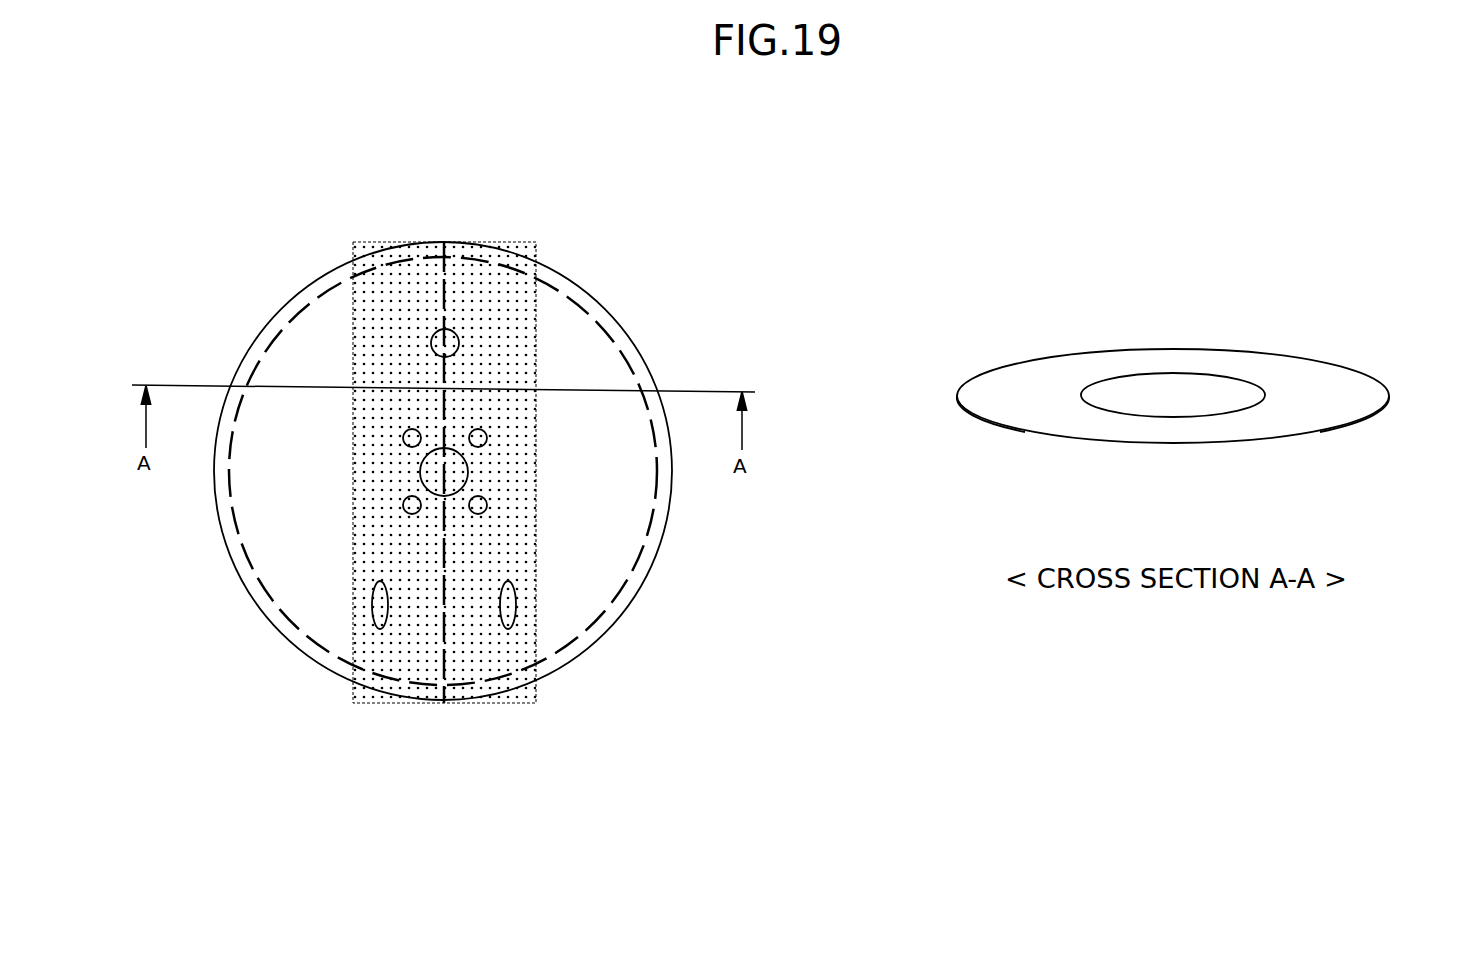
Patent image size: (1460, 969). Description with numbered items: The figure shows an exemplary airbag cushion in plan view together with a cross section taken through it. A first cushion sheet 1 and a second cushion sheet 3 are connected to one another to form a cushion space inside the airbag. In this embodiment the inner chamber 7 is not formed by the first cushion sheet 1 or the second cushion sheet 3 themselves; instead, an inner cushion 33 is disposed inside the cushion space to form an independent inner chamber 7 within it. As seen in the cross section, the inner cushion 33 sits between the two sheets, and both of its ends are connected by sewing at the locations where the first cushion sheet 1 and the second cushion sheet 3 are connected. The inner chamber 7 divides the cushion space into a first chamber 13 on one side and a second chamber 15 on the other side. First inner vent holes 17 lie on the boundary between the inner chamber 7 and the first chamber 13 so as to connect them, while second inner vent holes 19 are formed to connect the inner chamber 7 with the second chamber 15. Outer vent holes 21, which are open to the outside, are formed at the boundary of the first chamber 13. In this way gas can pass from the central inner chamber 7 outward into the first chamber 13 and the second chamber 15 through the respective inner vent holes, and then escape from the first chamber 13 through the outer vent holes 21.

The first cushion sheet 1 is at (1093, 440).
The second cushion sheet 3 is at (1042, 358).
The inner chamber 7 is at (382, 347).
The first chamber 13 is at (280, 503).
The second chamber 15 is at (607, 507).
The first inner vent holes 17 is at (385, 603).
The second inner vent holes 19 is at (516, 607).
The outer vent holes 21 is at (437, 332).
The inner cushion 33 is at (1230, 376).